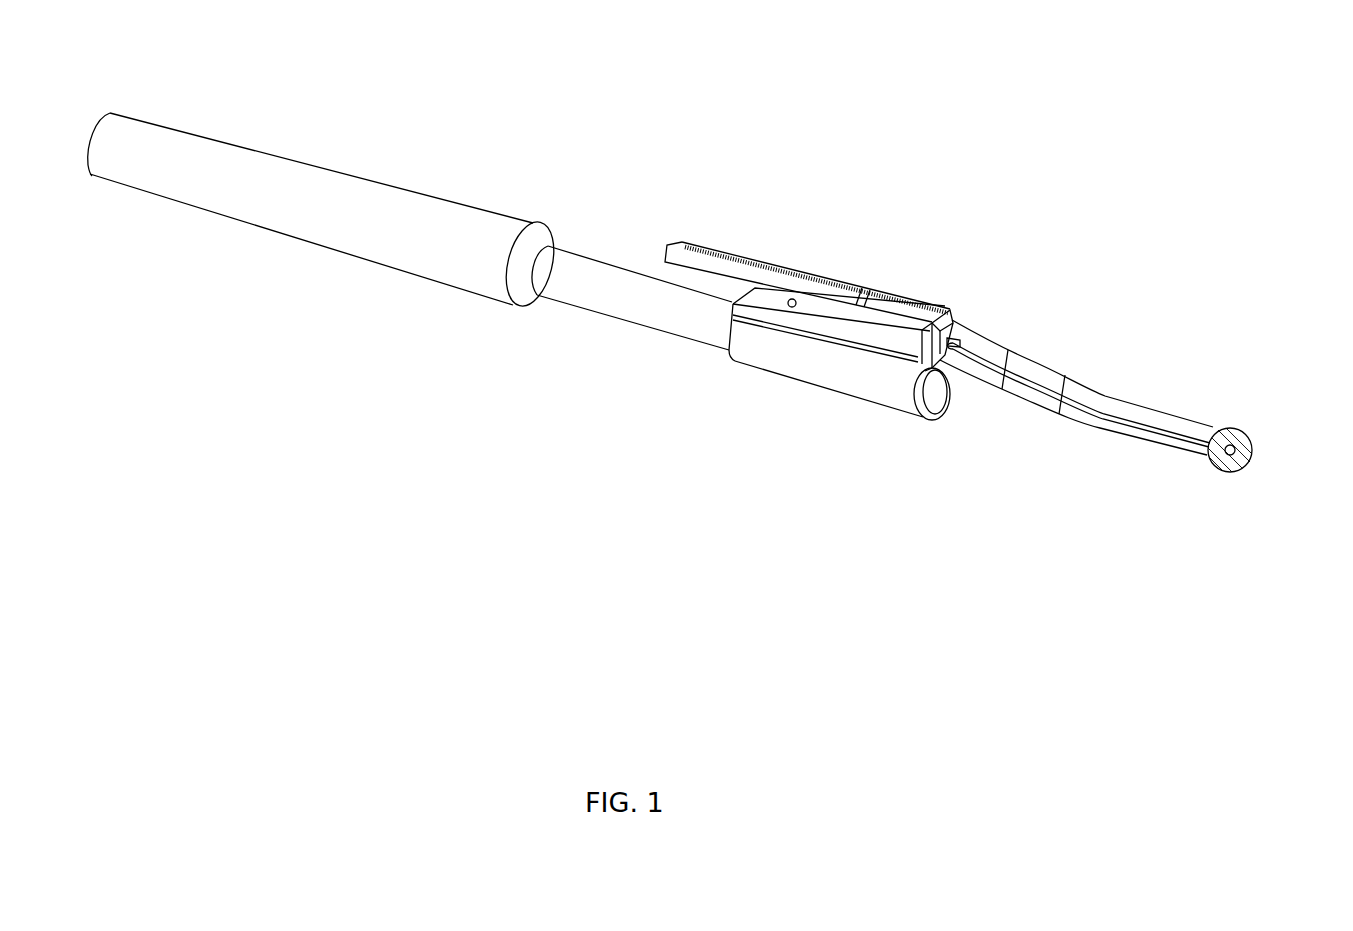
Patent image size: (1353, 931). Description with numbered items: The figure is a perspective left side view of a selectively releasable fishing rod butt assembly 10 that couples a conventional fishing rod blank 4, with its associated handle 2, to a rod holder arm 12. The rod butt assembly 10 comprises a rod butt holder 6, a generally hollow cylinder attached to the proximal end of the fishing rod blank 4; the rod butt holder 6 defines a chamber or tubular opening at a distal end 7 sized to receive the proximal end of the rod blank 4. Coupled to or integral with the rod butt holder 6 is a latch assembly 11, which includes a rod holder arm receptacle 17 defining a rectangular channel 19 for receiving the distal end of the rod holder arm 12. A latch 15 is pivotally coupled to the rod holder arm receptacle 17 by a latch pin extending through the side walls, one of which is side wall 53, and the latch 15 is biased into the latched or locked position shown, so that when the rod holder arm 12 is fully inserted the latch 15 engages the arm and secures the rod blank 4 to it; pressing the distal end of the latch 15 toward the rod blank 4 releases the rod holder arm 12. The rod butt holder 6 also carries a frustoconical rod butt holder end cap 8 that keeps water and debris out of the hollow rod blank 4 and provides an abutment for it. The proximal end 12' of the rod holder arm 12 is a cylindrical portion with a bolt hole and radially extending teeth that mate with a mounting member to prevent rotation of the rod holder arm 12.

The handle 2 is at (352, 177).
The fishing rod blank 4 is at (613, 317).
The rod butt holder 6 is at (803, 387).
The distal end 7 is at (727, 353).
The rod butt holder end cap 8 is at (933, 400).
The rod butt assembly 10 is at (983, 282).
The latch assembly 11 is at (840, 280).
The rod holder arm 12 is at (1076, 345).
The proximal end 12' is at (1279, 390).
The latch 15 is at (732, 254).
The rod holder arm receptacle 17 is at (924, 299).
The rectangular channel 19 is at (943, 358).
The side wall 53 is at (867, 327).